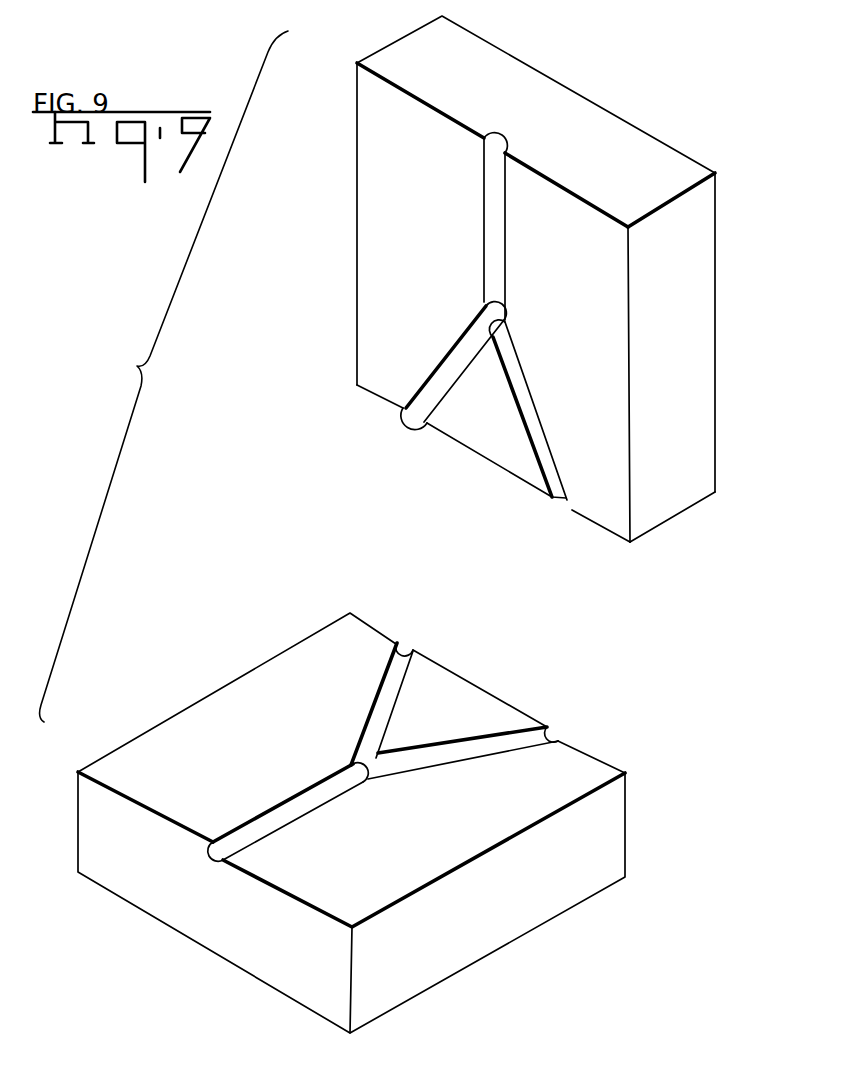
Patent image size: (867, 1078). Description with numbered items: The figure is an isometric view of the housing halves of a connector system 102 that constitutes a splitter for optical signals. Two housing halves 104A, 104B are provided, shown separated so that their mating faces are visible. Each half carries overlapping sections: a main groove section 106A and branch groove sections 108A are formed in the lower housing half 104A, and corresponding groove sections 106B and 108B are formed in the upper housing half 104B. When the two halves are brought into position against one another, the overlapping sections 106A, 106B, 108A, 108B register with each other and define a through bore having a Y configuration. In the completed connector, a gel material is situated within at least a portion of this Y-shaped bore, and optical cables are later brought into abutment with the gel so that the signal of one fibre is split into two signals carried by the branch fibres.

The mold assembly 102 is at (164, 376).
The housing half 104A is at (232, 728).
The housing half 104B is at (408, 253).
The overlapping section 106A is at (308, 803).
The main groove of upper block 106B is at (497, 222).
The overlapping section 108A is at (397, 675).
The branch grooves of upper block 108B is at (447, 368).